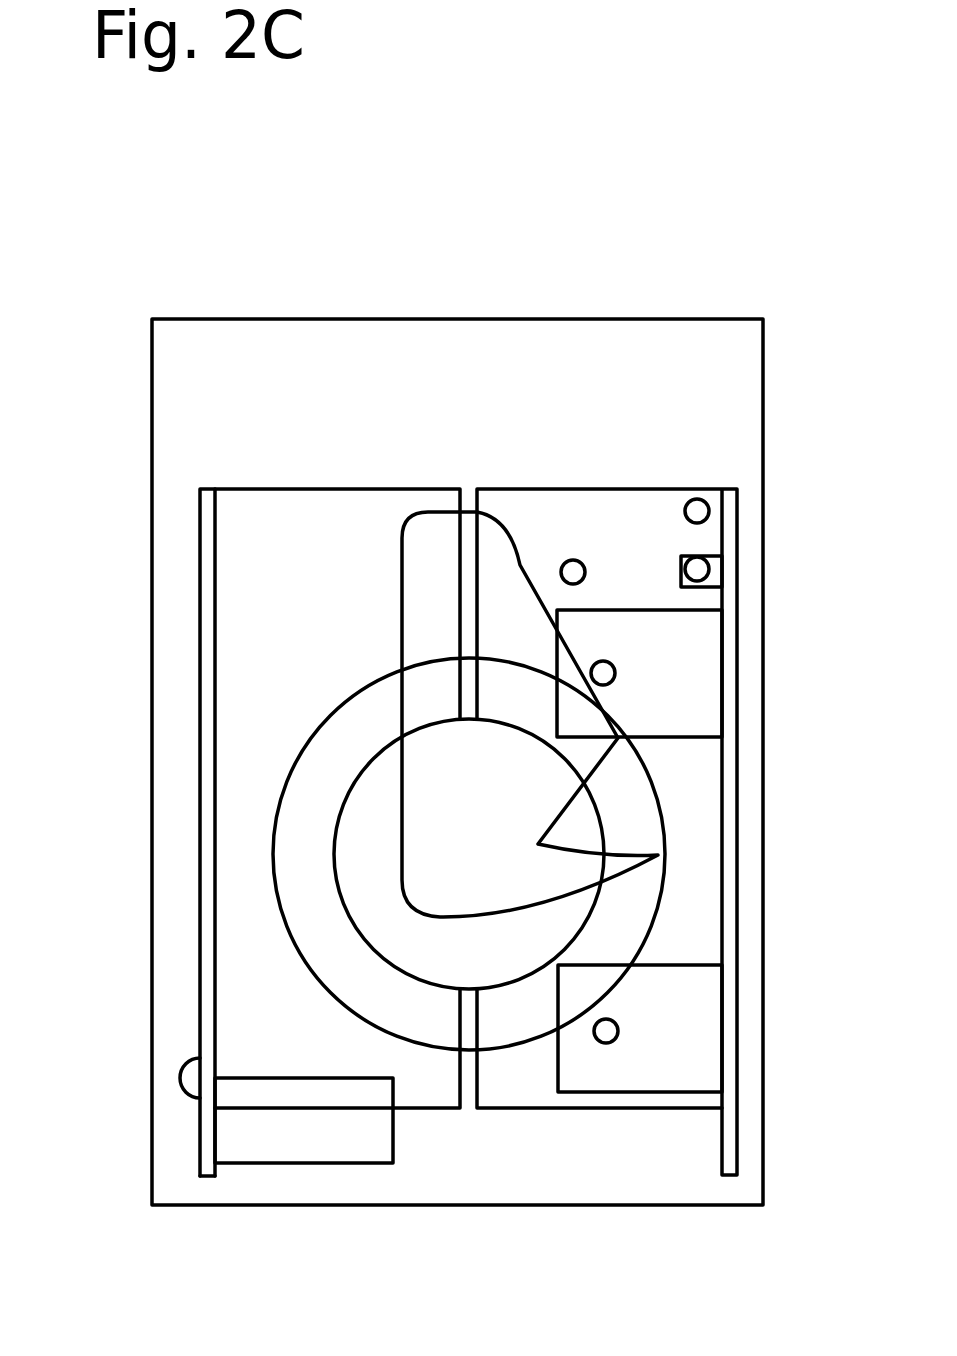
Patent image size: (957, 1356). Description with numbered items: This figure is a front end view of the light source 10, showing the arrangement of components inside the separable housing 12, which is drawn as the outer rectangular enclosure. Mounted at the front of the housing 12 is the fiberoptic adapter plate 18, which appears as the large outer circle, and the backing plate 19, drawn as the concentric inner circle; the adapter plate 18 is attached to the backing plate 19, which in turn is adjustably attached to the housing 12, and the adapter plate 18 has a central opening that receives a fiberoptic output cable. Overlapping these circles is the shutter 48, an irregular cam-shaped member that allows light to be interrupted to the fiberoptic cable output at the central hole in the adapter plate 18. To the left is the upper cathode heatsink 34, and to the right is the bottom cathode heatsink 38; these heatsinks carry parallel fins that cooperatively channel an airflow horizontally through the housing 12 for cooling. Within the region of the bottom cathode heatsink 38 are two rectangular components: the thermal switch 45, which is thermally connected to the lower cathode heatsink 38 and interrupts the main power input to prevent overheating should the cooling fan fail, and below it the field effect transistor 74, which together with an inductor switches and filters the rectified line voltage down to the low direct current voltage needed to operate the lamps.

The light source 10 is at (473, 258).
The separable housing 12 is at (150, 492).
The fiberoptic adapter plate 18 is at (283, 792).
The backing plate 19 is at (363, 770).
The upper cathode heatsink 34 is at (333, 574).
The bottom cathode heatsink 38 is at (640, 549).
The thermal switch 45 is at (683, 683).
The shutter 48 is at (402, 617).
The field effect transistor 74 is at (685, 1047).